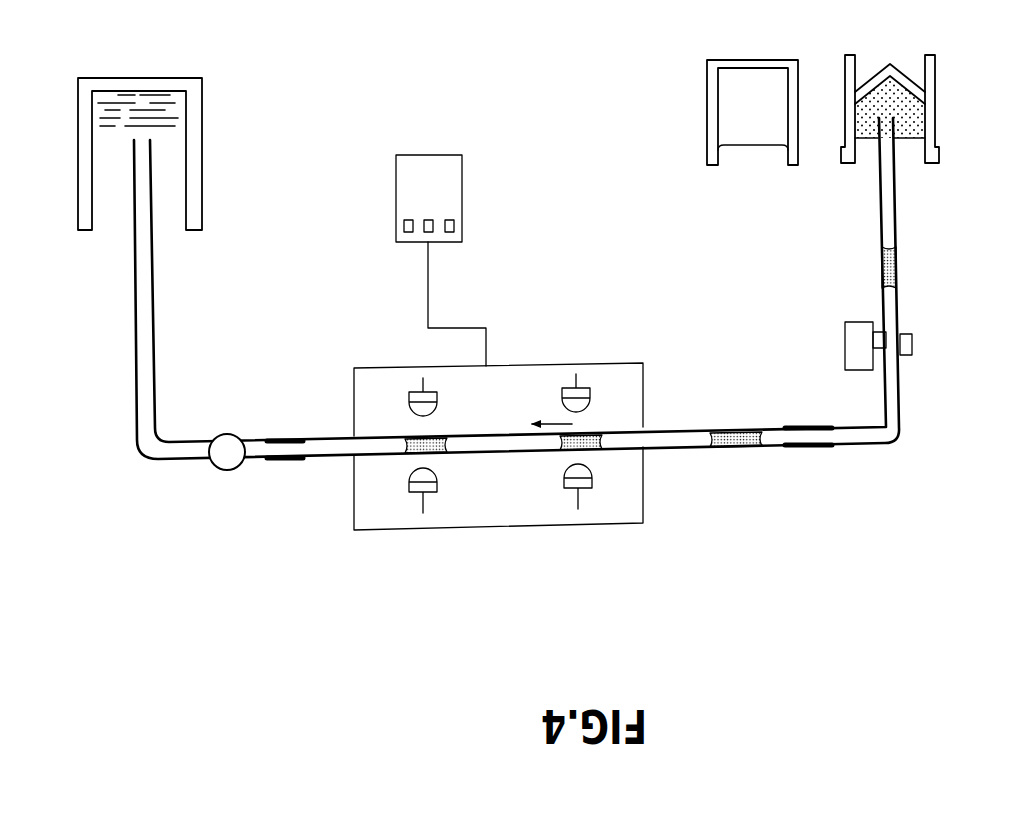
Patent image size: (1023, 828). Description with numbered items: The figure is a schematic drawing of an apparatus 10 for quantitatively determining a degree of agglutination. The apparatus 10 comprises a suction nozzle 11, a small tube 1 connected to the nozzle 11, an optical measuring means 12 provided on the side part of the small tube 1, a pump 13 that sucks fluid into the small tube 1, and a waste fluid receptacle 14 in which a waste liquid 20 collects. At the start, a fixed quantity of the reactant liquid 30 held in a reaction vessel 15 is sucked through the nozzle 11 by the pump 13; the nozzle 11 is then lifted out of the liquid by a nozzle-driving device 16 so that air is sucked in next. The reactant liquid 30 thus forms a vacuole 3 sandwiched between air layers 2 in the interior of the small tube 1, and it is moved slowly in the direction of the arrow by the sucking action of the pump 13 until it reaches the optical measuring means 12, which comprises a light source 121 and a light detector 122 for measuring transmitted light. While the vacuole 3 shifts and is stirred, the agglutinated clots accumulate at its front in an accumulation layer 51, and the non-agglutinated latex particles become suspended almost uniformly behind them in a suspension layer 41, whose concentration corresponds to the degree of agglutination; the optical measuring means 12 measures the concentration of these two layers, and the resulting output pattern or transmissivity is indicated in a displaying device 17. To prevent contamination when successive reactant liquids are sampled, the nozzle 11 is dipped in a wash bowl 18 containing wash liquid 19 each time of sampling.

The small tube 1 is at (676, 447).
The air layers 2 is at (878, 216).
The vacuole 3 is at (876, 269).
The apparatus 10 is at (298, 617).
The suction nozzle 11 is at (902, 395).
The optical measuring means 12 is at (508, 526).
The light source 121 is at (412, 518).
The light detector 122 is at (418, 400).
The pump 13 is at (225, 463).
The waste fluid receptacle 14 is at (200, 118).
The reaction vessel 15 is at (935, 95).
The nozzle-driving device 16 is at (855, 343).
The displaying device 17 is at (428, 168).
The wash bowl 18 is at (707, 95).
The wash liquid 19 is at (733, 108).
The waste liquid 20 is at (108, 112).
The reactant liquid 30 is at (915, 118).
The suspension layer 41 is at (453, 436).
The accumulation layer 51 is at (407, 437).